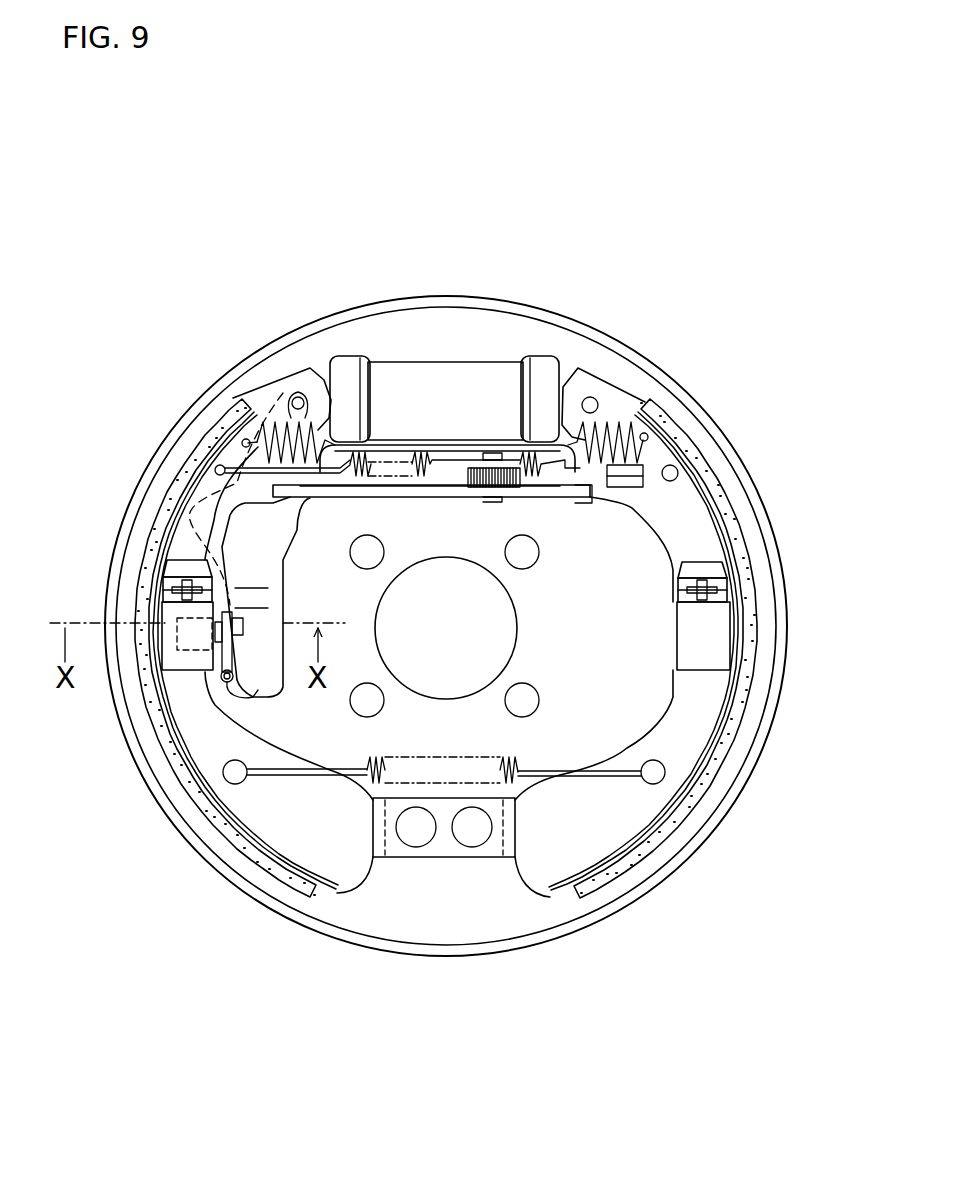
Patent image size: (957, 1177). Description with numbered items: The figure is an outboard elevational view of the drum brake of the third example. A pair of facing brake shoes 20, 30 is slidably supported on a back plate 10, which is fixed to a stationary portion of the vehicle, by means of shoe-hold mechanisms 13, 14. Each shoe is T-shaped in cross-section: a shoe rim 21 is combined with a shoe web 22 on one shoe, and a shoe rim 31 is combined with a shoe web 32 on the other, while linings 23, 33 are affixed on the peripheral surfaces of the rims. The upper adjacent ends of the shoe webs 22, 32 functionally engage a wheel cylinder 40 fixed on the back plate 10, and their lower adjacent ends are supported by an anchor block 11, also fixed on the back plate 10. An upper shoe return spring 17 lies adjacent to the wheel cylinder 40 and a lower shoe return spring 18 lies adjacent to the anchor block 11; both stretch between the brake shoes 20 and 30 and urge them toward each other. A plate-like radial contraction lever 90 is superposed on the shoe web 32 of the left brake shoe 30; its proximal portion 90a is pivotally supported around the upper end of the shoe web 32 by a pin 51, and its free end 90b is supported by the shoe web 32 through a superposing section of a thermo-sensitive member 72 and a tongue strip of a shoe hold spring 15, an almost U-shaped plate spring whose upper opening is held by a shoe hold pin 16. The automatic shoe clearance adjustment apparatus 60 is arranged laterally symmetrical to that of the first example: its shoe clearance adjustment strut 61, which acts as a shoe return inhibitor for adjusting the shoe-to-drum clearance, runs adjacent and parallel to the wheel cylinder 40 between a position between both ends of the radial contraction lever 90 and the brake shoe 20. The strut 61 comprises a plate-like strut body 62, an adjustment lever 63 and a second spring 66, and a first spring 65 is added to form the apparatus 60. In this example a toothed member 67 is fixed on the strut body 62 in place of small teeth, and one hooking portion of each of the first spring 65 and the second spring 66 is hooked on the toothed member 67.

The back plate 10 is at (572, 310).
The anchor block 11 is at (446, 864).
The shoe-hold mechanism 13 is at (737, 622).
The shoe-hold mechanism 14 is at (152, 618).
The shoe hold spring 15 is at (160, 637).
The shoe hold pin 16 is at (166, 570).
The upper shoe return spring 17 is at (610, 430).
The lower shoe return spring 18 is at (520, 777).
The brake shoe 20 is at (662, 671).
The shoe rim 21 is at (678, 822).
The shoe web 22 is at (706, 762).
The lining 23 is at (682, 768).
The brake shoe 30 is at (230, 662).
The shoe rim 31 is at (256, 833).
The shoe web 32 is at (215, 787).
The lining 33 is at (180, 783).
The wheel cylinder 40 is at (450, 352).
The pin 51 is at (297, 396).
The automatic shoe clearance adjustment apparatus 60 is at (500, 522).
The shoe clearance adjustment strut 61 is at (381, 497).
The strut body 62 is at (413, 504).
The adjustment lever 63 is at (628, 508).
The first spring 65 is at (383, 470).
The second spring 66 is at (535, 465).
The toothed member 67 is at (447, 472).
The thermo-sensitive member 72 is at (223, 680).
The radial contraction lever 90 is at (270, 560).
The proximal portion 90a is at (257, 380).
The free end 90b is at (252, 686).